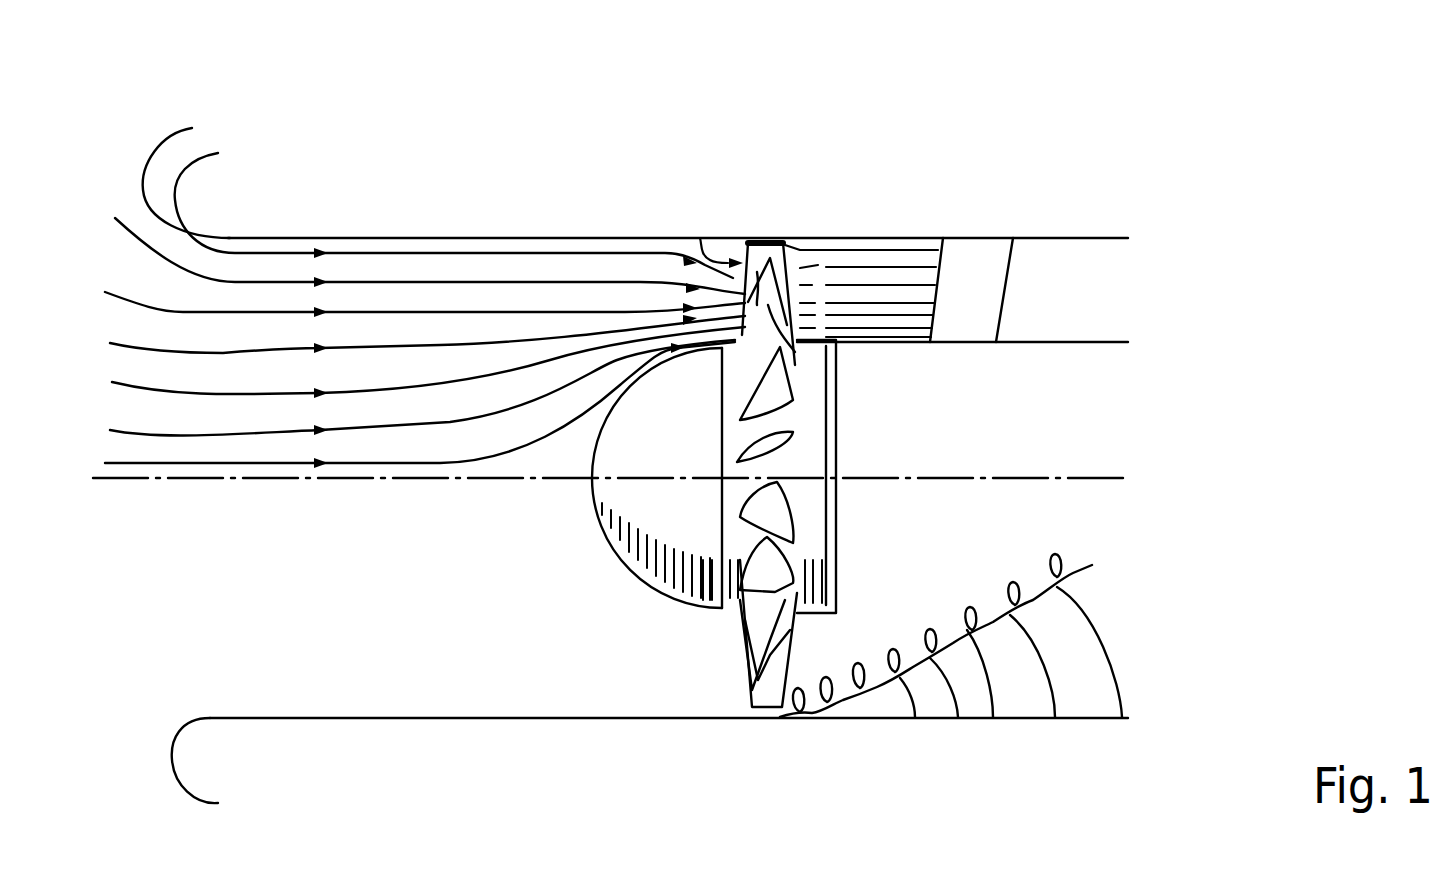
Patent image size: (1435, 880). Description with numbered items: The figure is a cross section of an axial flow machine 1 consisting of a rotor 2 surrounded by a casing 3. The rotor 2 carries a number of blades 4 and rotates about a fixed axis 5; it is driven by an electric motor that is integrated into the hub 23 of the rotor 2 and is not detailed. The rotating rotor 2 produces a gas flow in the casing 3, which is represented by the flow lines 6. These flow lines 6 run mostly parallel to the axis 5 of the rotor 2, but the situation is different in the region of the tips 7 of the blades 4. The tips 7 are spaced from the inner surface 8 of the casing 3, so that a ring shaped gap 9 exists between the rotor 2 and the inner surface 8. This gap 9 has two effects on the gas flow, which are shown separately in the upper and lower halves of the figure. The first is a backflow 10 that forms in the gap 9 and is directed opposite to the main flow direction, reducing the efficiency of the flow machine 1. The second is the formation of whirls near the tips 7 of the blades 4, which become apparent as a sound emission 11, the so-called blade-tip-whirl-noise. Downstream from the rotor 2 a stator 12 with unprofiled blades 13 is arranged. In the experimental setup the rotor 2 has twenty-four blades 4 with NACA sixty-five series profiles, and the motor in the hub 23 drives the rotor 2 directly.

The axial flow machine 1 is at (496, 182).
The rotor 2 is at (735, 605).
The casing 3 is at (448, 718).
The blades 4 is at (770, 552).
The axis 5 is at (1097, 480).
The flow lines 6 is at (363, 348).
The tips 7 is at (753, 238).
The inner surface 8 is at (1063, 253).
The gap 9 is at (777, 238).
The backflow 10 is at (703, 247).
The sound emission 11 is at (1010, 672).
The stator 12 is at (1016, 330).
The unprofiled blades 13 is at (985, 312).
The hub 23 is at (917, 360).